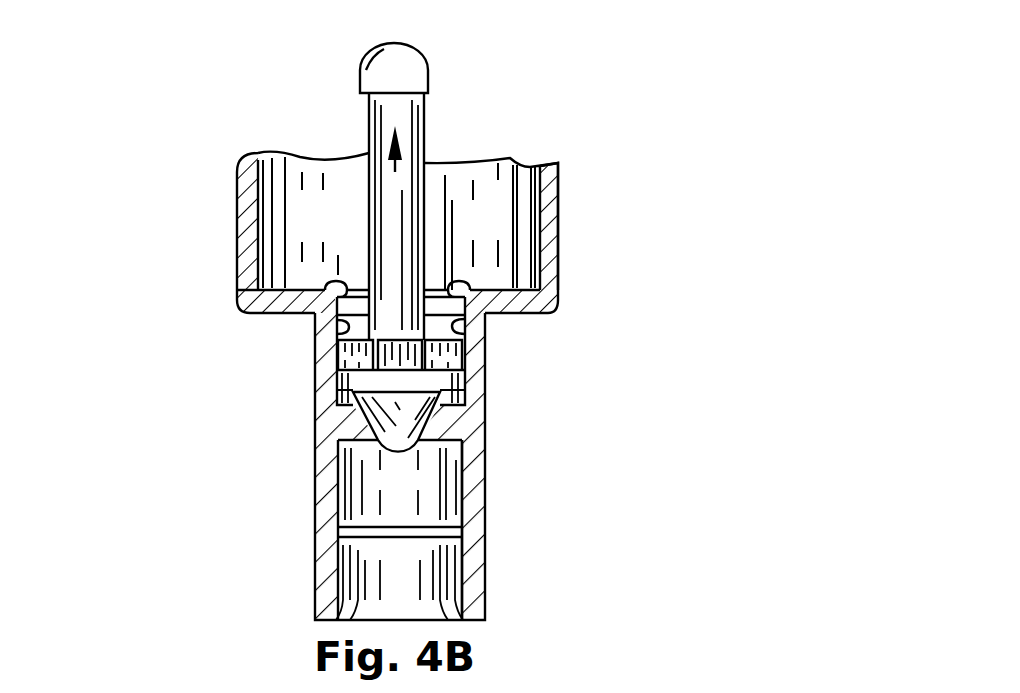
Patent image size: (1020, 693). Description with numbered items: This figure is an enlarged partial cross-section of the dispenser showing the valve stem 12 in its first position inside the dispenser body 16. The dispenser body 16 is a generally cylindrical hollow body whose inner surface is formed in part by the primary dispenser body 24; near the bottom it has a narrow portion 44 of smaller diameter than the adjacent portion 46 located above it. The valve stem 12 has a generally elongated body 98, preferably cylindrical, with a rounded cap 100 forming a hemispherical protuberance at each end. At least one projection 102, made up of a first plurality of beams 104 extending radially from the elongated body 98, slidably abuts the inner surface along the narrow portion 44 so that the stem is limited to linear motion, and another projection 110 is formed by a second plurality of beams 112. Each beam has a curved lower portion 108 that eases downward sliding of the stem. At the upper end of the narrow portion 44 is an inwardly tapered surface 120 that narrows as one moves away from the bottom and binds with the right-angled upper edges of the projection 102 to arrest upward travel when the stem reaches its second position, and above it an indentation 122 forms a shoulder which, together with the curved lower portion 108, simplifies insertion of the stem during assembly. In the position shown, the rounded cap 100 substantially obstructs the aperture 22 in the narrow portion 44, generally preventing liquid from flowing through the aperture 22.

The valve stem 12 is at (426, 140).
The dispenser body 16 is at (560, 229).
The aperture 22 is at (410, 457).
The primary dispenser body 24 is at (550, 187).
The narrow portion 44 is at (470, 473).
The adjacent portion 46 is at (552, 262).
The elongated body 98 is at (426, 107).
The rounded cap 100 is at (428, 72).
The projection 102 is at (470, 366).
The first plurality of beams 104 is at (340, 362).
The curved lower portion 108 is at (345, 395).
The another projection 110 is at (355, 238).
The second plurality of beams 112 is at (504, 238).
The inwardly tapered surface 120 is at (337, 322).
The indentation 122 is at (330, 290).